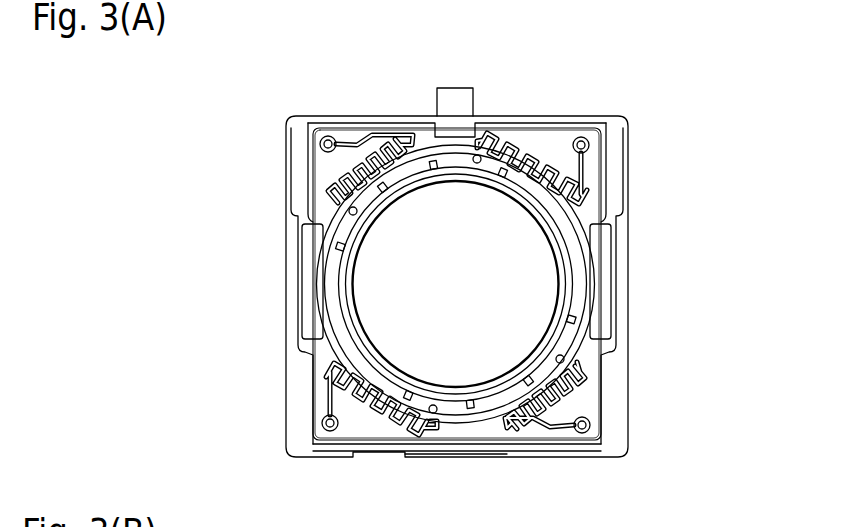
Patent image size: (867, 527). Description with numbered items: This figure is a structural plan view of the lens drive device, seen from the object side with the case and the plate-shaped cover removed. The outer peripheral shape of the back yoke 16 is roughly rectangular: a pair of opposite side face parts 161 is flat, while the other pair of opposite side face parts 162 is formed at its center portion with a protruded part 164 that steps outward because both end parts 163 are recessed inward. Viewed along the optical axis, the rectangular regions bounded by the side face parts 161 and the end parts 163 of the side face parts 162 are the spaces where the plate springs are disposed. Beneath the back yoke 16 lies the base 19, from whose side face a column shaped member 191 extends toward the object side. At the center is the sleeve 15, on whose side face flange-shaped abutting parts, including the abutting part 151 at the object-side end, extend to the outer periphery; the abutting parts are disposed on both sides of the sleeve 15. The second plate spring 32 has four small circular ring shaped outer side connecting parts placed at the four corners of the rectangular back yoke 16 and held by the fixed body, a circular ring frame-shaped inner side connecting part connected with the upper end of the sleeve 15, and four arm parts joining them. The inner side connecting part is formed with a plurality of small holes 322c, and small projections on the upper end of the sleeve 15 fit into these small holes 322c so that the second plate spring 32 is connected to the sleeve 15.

The sleeve 15 is at (573, 290).
The back yoke 16 is at (528, 116).
The side face parts 161 is at (368, 116).
The side face parts 162 is at (498, 283).
The end parts 163 is at (300, 161).
The protruded part 164 is at (196, 155).
The base 19 is at (618, 170).
The column shaped member 191 is at (455, 88).
The abutting part 151 is at (305, 305).
The second plate spring 32 is at (594, 358).
The small holes 322c is at (557, 355).